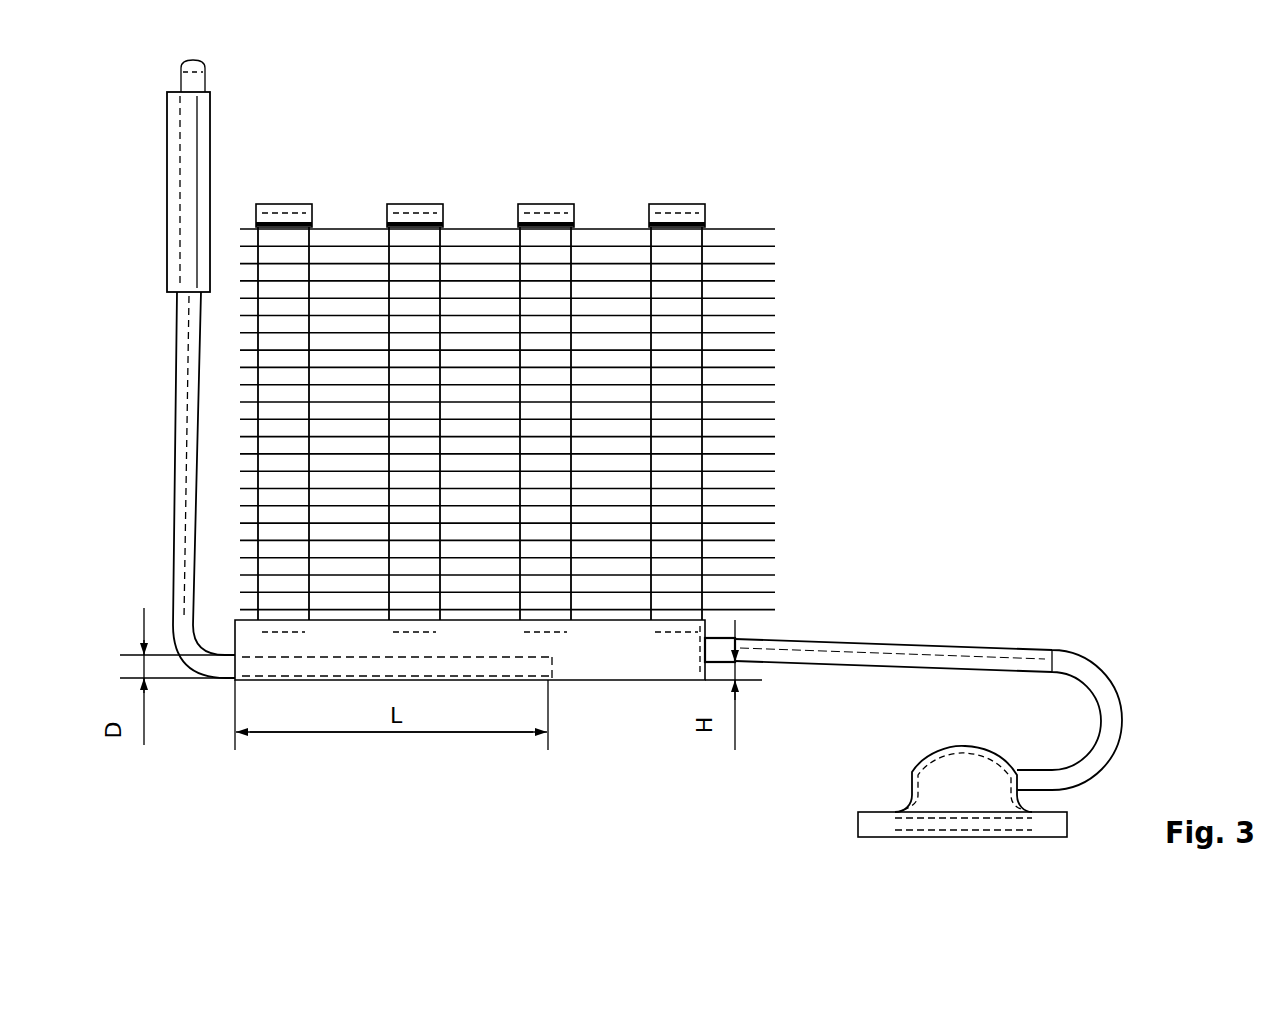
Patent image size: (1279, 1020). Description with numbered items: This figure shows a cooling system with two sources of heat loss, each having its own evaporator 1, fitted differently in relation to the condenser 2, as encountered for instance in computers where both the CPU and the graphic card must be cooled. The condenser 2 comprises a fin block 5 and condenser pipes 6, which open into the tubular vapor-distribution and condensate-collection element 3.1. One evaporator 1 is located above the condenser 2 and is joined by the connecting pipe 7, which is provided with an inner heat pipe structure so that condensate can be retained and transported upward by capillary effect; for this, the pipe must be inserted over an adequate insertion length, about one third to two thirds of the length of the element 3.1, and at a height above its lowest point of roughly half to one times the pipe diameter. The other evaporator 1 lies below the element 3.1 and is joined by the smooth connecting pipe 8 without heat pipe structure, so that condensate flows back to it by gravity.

The evaporator 1 is at (187, 200).
The condenser 2 is at (691, 362).
The tubular vapor-distribution and condensate-collection element 3.1 is at (625, 653).
The fin block 5 is at (757, 283).
The condenser pipes 6 is at (293, 210).
The connecting pipe with heat pipe structure 7 is at (183, 525).
The connecting pipe without heat pipe structure 8 is at (1007, 660).